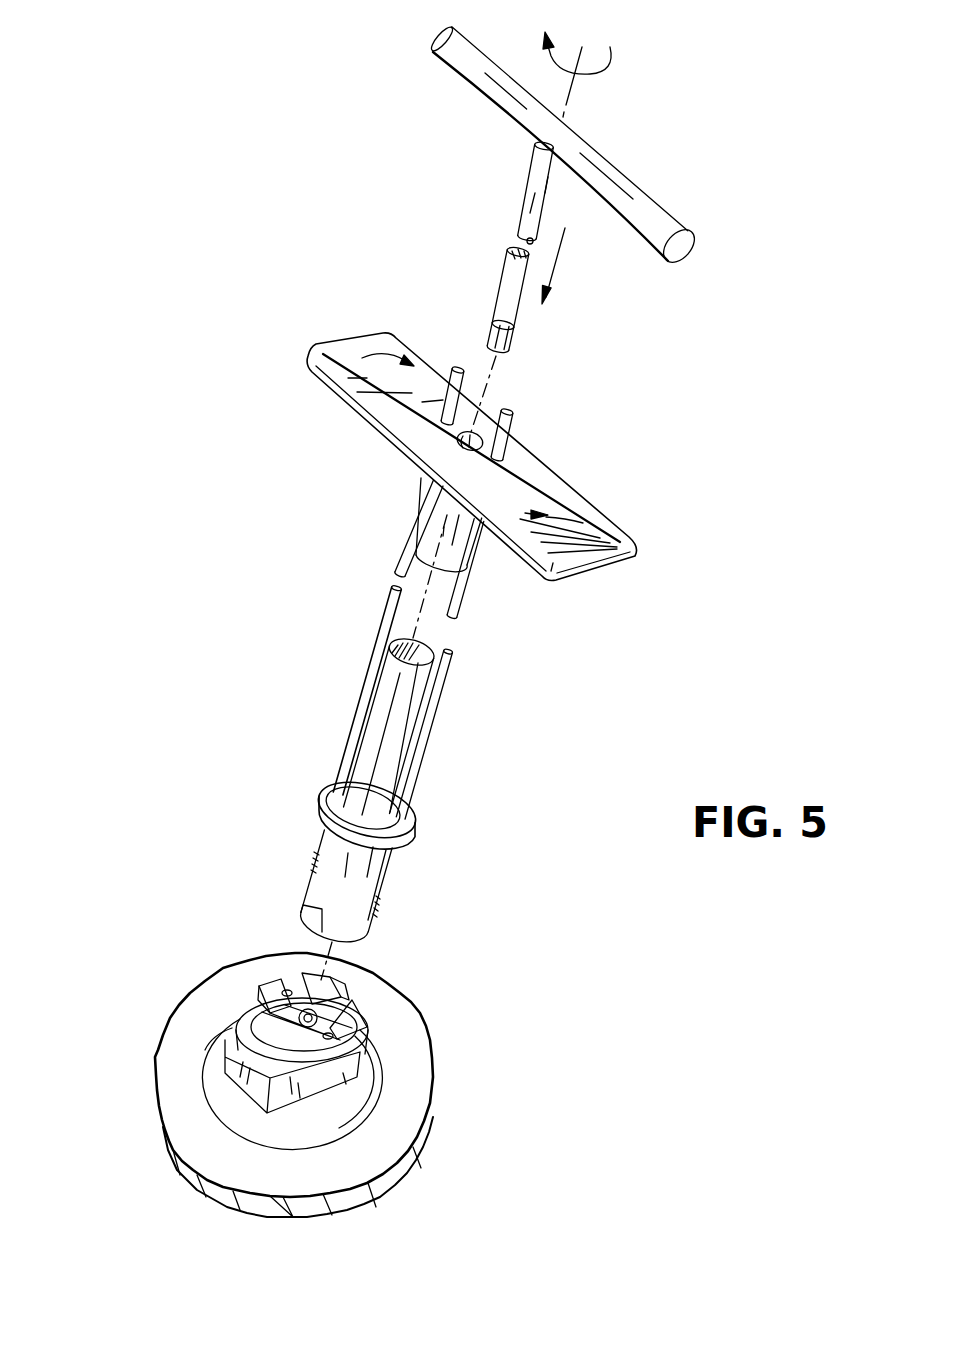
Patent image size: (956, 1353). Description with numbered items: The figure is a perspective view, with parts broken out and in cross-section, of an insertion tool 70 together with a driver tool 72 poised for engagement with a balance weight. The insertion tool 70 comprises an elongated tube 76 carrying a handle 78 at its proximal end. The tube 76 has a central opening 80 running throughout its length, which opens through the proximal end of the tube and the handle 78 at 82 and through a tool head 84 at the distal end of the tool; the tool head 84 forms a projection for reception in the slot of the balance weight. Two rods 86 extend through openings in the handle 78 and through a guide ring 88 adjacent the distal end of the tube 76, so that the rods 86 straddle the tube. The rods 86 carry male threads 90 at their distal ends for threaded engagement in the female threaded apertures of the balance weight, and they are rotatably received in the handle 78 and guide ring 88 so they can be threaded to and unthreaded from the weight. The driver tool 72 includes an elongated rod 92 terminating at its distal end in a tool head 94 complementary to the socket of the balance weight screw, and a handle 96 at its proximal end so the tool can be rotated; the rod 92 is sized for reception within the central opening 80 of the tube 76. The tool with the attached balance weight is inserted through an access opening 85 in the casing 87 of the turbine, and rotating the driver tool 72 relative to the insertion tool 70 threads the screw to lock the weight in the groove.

The insertion tool 70 is at (306, 492).
The driver tool 72 is at (386, 126).
The elongated tube 76 is at (395, 723).
The handle 78 is at (362, 346).
The central opening 80 is at (432, 630).
The opening through proximal end 82 is at (487, 425).
The tool head 84 is at (315, 930).
The access opening 85 is at (217, 1074).
The rods 86 is at (380, 610).
The casing 87 is at (400, 1020).
The guide ring 88 is at (320, 790).
The male threads 90 is at (315, 857).
The elongated rod 92 is at (522, 303).
The tool head 94 is at (487, 331).
The handle 96 is at (648, 203).